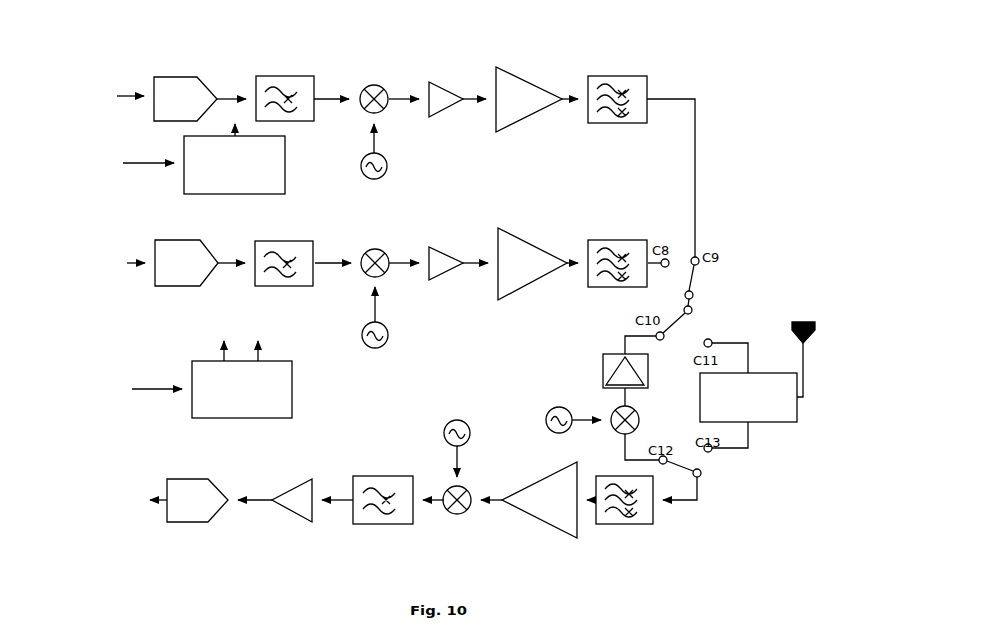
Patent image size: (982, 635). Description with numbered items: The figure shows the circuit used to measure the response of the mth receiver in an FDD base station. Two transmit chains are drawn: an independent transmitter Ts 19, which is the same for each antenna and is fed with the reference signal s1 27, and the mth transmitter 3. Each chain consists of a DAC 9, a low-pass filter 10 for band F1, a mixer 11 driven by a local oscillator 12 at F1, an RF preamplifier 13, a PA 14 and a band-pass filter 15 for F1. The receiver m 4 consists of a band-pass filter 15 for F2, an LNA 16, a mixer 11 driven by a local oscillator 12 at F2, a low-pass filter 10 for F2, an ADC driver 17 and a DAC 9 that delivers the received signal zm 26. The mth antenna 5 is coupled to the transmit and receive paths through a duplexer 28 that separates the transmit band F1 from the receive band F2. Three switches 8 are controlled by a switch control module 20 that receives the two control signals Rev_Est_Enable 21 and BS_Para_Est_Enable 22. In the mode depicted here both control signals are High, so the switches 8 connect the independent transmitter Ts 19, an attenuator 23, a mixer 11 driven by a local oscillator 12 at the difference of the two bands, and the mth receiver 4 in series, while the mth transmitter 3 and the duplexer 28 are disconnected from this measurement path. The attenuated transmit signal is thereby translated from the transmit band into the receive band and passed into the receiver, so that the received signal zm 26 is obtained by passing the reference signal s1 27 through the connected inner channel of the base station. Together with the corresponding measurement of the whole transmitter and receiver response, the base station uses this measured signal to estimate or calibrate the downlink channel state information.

The transmitter m 3 is at (143, 234).
The receiver m 4 is at (167, 522).
The antenna m 5 is at (782, 351).
The switch 8 is at (696, 370).
The Digital-to-Analog Convertor (DAC) 9 is at (186, 181).
The Low-Pass Filter (LPF) 10 is at (331, 303).
The mixer 11 is at (494, 303).
The Local Oscillator (LO) 12 is at (466, 306).
The RF preamplifier 13 is at (451, 153).
The PA 14 is at (531, 183).
The Band-Pass Filter (BPF) 15 is at (621, 303).
The LNA 16 is at (539, 500).
The ADC driver 17 is at (274, 527).
The independent transmitter Ts 19 is at (133, 54).
The switch control module 20 is at (238, 277).
The Rev_Est_Enable 21 is at (103, 155).
The BS_Para_Est_Enable 22 is at (120, 381).
The attenuator 23 is at (585, 363).
The received signal zm 26 is at (145, 498).
The reference signal s1 27 is at (128, 95).
The duplexer 28 is at (748, 397).